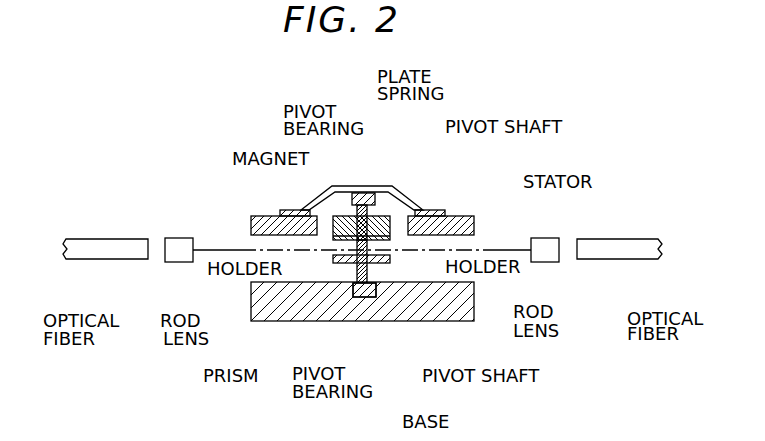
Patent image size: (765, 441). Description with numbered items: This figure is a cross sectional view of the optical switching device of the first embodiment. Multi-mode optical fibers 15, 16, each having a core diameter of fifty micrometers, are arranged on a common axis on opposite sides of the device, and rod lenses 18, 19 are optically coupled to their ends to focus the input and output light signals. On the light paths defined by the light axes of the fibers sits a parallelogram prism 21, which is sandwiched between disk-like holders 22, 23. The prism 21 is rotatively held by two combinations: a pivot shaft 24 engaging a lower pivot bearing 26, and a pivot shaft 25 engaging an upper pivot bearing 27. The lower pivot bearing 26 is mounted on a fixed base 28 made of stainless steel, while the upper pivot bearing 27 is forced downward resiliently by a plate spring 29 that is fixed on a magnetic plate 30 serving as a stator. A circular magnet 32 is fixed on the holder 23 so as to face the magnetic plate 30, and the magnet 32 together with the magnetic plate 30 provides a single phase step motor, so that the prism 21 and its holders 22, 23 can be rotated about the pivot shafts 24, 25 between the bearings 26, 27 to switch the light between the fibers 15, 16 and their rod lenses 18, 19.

The multi-mode optical fiber 15 is at (637, 250).
The multi-mode optical fiber 16 is at (93, 253).
The rod lens 18 is at (545, 253).
The rod lens 19 is at (183, 255).
The parallelogram prism 21 is at (318, 280).
The holder 22 is at (340, 260).
The holder 23 is at (397, 237).
The pivot shaft 24 is at (378, 276).
The pivot shaft 25 is at (395, 207).
The lower pivot bearing 26 is at (353, 293).
The upper pivot bearing 27 is at (357, 203).
The fixed base 28 is at (398, 315).
The plate spring 29 is at (377, 186).
The magnetic plate (stator) 30 is at (260, 215).
The circular magnet 32 is at (320, 210).